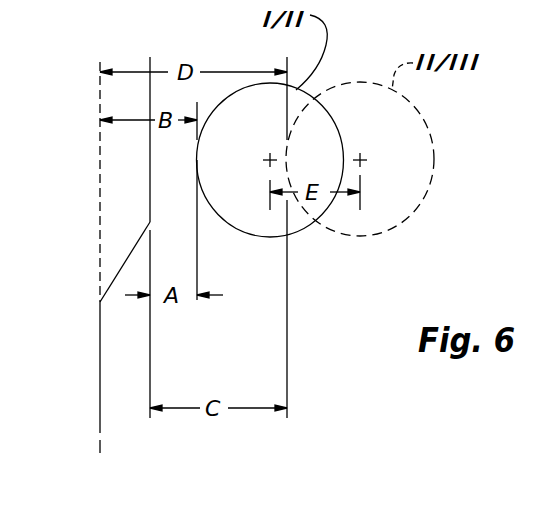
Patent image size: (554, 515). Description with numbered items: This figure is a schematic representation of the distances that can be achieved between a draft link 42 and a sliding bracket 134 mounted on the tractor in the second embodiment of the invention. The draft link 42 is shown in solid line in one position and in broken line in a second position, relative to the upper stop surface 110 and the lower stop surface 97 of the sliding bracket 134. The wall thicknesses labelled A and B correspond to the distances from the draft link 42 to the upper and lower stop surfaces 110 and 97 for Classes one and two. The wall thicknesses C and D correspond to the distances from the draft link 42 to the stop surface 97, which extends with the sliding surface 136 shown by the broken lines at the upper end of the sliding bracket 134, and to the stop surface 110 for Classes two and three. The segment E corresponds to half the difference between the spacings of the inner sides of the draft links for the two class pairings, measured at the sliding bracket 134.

The sliding bracket 134 is at (80, 90).
The upper stop surface 110 is at (140, 174).
The sliding surface 136 is at (118, 255).
The lower stop surface 97 is at (92, 402).
The draft link 42 is at (300, 229).